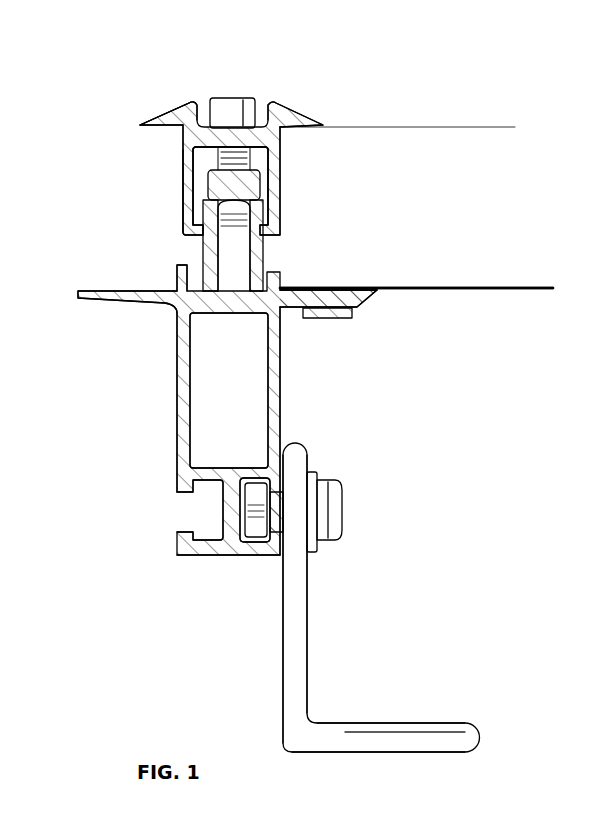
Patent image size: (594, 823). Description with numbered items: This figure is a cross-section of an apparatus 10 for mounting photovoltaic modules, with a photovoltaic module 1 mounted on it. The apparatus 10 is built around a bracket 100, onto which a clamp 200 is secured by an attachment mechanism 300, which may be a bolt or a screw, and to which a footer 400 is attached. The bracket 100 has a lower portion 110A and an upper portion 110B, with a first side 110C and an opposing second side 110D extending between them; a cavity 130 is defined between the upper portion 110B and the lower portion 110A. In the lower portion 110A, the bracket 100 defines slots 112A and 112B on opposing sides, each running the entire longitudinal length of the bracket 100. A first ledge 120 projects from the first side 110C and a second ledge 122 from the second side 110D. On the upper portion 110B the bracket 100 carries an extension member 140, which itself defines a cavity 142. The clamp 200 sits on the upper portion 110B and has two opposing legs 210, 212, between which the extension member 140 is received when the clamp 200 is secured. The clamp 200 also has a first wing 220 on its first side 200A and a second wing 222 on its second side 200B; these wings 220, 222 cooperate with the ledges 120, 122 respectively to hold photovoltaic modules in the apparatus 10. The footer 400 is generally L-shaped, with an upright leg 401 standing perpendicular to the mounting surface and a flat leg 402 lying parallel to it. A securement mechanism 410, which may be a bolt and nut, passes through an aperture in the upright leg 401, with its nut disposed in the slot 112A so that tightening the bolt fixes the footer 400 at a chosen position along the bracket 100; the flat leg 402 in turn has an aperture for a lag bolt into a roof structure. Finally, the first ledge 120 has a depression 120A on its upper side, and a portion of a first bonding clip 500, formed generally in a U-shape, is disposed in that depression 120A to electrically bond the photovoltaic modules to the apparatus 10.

The photovoltaic module 1 is at (490, 133).
The apparatus 10 is at (143, 152).
The bracket 100 is at (155, 376).
The lower portion 110A is at (183, 585).
The upper portion 110B is at (176, 247).
The first side 110C is at (315, 391).
The second side 110D is at (155, 433).
The slot 112A is at (250, 556).
The slot 112B is at (172, 510).
The first ledge 120 is at (370, 302).
The depression 120A is at (360, 275).
The second ledge 122 is at (103, 302).
The cavity 130 is at (258, 433).
The extension member 140 is at (277, 246).
The cavity 142 is at (238, 268).
The clamp 200 is at (312, 82).
The first side 200A is at (345, 118).
The second side 200B is at (126, 116).
The leg 210 is at (281, 182).
The leg 212 is at (187, 195).
The first wing 220 is at (340, 105).
The second wing 222 is at (172, 110).
The attachment mechanism 300 is at (231, 97).
The footer 400 is at (333, 641).
The upright leg 401 is at (310, 592).
The flat leg 402 is at (413, 724).
The securement mechanism 410 is at (347, 508).
The first bonding clip 500 is at (330, 319).